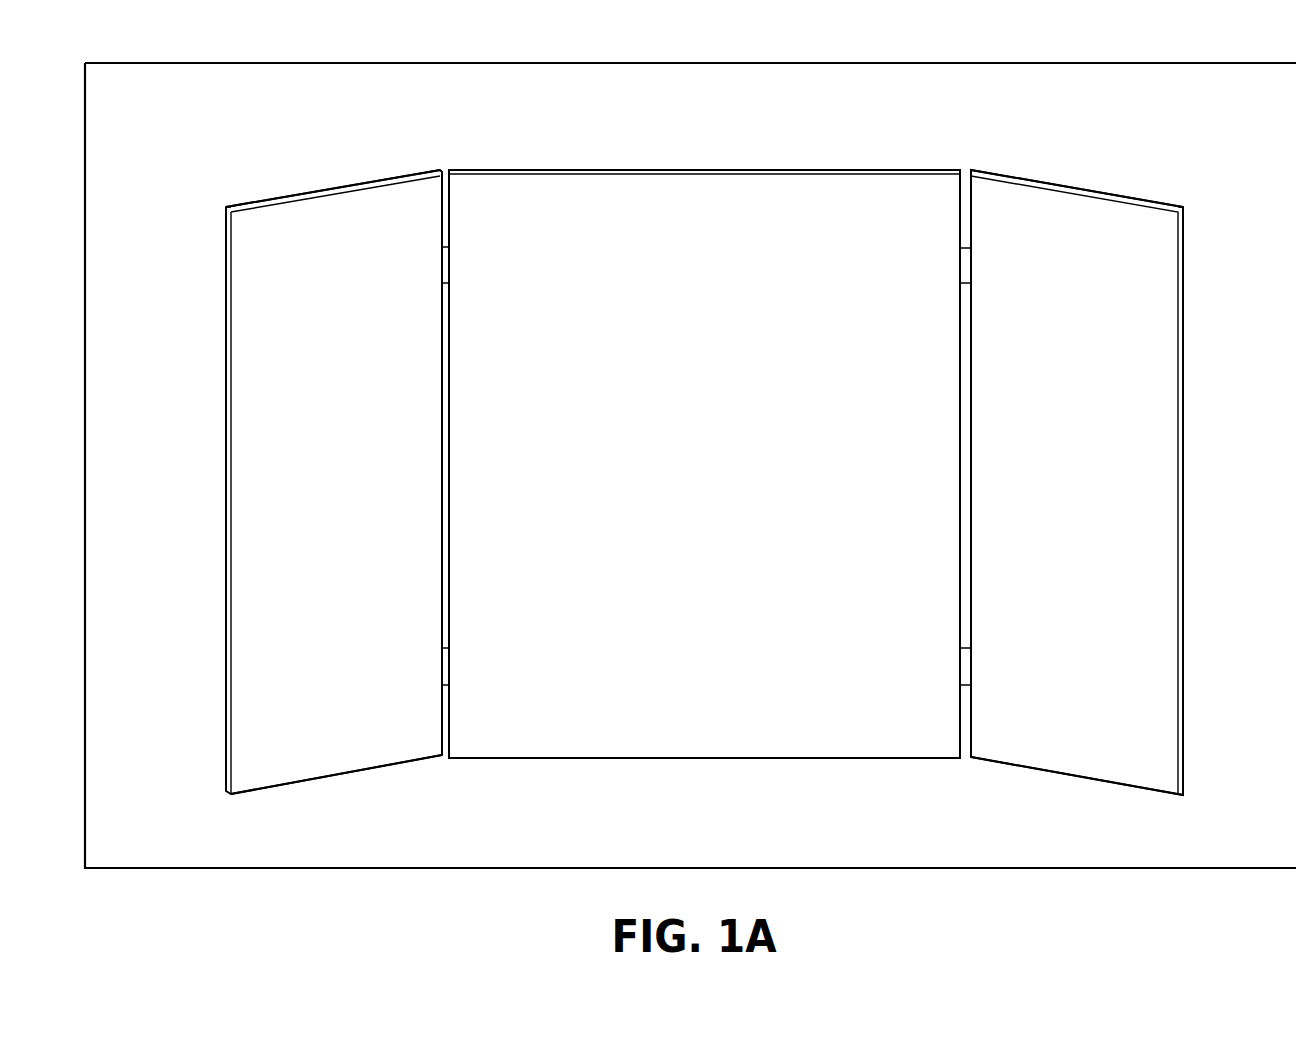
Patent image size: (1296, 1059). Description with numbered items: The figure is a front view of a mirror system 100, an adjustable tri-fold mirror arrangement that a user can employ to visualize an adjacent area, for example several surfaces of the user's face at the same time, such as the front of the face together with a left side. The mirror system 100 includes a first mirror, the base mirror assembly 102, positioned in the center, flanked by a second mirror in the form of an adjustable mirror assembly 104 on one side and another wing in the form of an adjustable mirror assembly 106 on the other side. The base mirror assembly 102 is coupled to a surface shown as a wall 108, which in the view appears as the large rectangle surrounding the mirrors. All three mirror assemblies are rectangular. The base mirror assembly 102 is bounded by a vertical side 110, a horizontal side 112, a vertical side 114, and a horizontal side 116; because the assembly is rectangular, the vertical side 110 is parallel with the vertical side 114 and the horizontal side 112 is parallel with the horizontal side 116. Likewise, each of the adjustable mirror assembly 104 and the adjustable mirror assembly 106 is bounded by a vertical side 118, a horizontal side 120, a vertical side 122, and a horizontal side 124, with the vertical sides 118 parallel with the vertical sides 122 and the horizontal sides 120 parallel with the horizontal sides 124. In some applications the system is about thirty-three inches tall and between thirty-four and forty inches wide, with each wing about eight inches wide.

The mirror system 100 is at (156, 197).
The base mirror assembly 102 is at (659, 212).
The adjustable mirror assembly 104 is at (362, 210).
The adjustable mirror assembly 106 is at (1115, 212).
The wall 108 is at (85, 104).
The vertical side 110 is at (446, 735).
The horizontal side 112 is at (560, 170).
The vertical side 114 is at (964, 198).
The horizontal side 116 is at (713, 760).
The vertical side 118 is at (445, 205).
The horizontal side 120 is at (263, 201).
The vertical side 122 is at (230, 433).
The horizontal side 124 is at (318, 777).